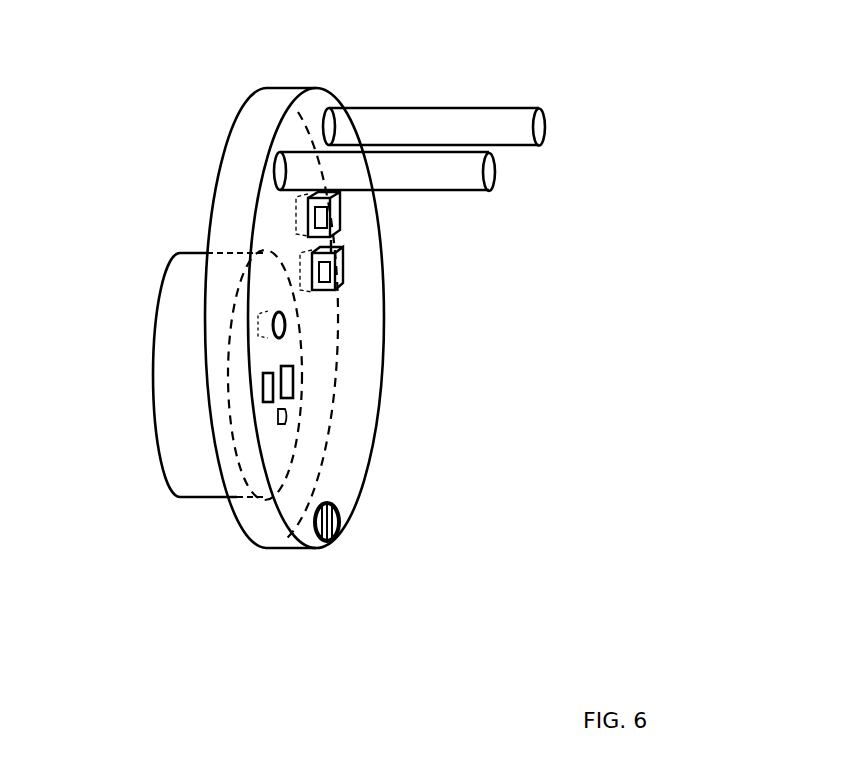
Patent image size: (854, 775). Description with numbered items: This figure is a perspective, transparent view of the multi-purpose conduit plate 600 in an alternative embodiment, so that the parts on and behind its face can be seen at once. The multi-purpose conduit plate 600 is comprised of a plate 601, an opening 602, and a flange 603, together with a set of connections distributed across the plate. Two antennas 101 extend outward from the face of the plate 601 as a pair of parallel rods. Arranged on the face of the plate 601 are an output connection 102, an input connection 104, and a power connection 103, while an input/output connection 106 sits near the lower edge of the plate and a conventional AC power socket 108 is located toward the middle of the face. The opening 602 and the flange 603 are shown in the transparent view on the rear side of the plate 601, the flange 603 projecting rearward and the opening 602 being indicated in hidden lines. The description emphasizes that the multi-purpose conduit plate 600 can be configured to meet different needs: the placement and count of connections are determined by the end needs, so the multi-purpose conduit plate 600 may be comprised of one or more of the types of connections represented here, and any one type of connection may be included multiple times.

The multi-purpose conduit plate 600 is at (310, 102).
The plate 601 is at (247, 112).
The antennas 101 is at (491, 163).
The output connection 102 is at (334, 213).
The input connection 104 is at (322, 268).
The power connection 103 is at (284, 324).
The conventional AC power socket 108 is at (294, 383).
The input/output connection 106 is at (341, 516).
The opening 602 is at (230, 355).
The flange 603 is at (170, 390).